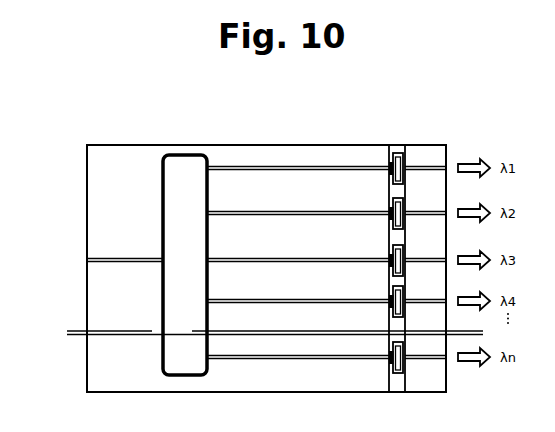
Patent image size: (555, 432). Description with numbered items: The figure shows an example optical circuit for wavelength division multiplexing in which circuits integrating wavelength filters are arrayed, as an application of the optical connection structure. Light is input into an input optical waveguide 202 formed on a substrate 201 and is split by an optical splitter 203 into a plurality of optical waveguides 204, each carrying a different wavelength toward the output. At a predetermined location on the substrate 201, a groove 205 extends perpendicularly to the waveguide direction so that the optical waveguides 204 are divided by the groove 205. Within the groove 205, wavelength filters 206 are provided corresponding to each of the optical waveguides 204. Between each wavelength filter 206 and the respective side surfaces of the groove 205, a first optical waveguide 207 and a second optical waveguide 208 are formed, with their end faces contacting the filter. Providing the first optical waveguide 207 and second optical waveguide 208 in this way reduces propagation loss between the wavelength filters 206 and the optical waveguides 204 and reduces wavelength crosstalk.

The substrate 201 is at (87, 208).
The input optical waveguide 202 is at (115, 258).
The optical splitter 203 is at (184, 155).
The optical waveguides 204 is at (255, 165).
The groove 205 is at (389, 162).
The wavelength filter 206 is at (397, 152).
The first optical waveguide 207 is at (394, 173).
The second optical waveguide 208 is at (392, 187).